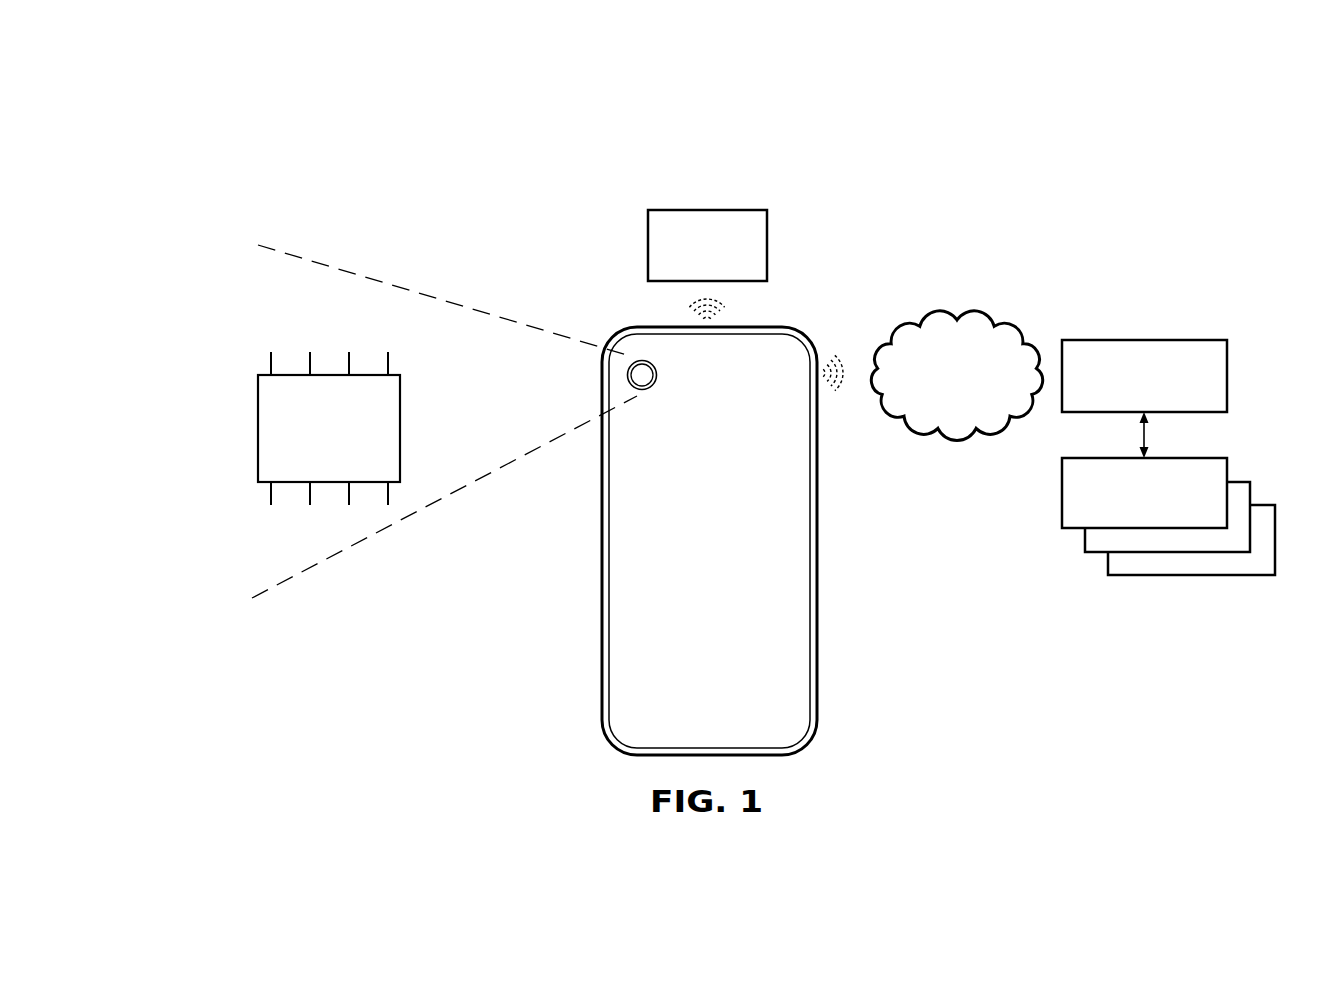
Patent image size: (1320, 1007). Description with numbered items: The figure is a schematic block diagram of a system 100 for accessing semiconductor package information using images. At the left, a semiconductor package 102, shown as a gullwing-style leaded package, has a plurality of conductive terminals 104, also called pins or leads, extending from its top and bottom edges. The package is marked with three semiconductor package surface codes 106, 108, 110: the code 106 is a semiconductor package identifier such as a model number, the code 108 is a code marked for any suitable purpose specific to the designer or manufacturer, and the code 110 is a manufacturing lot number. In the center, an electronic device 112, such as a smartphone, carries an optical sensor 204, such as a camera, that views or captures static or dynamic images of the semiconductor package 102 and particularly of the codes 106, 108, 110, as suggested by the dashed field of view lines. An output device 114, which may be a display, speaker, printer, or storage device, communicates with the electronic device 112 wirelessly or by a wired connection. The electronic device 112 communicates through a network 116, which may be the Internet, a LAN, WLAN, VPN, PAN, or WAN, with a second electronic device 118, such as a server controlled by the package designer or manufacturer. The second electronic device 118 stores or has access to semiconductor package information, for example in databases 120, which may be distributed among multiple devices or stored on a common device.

The system 100 is at (945, 138).
The semiconductor package 102 is at (340, 429).
The conductive terminals 104 is at (347, 363).
The semiconductor package surface code 106 is at (273, 400).
The semiconductor package surface code 108 is at (261, 430).
The semiconductor package surface code 110 is at (265, 460).
The electronic device 112 is at (728, 588).
The output device 114 is at (647, 242).
The network 116 is at (992, 322).
The second electronic device 118 is at (1155, 338).
The databases 120 is at (1190, 577).
The optical sensor 204 is at (657, 373).